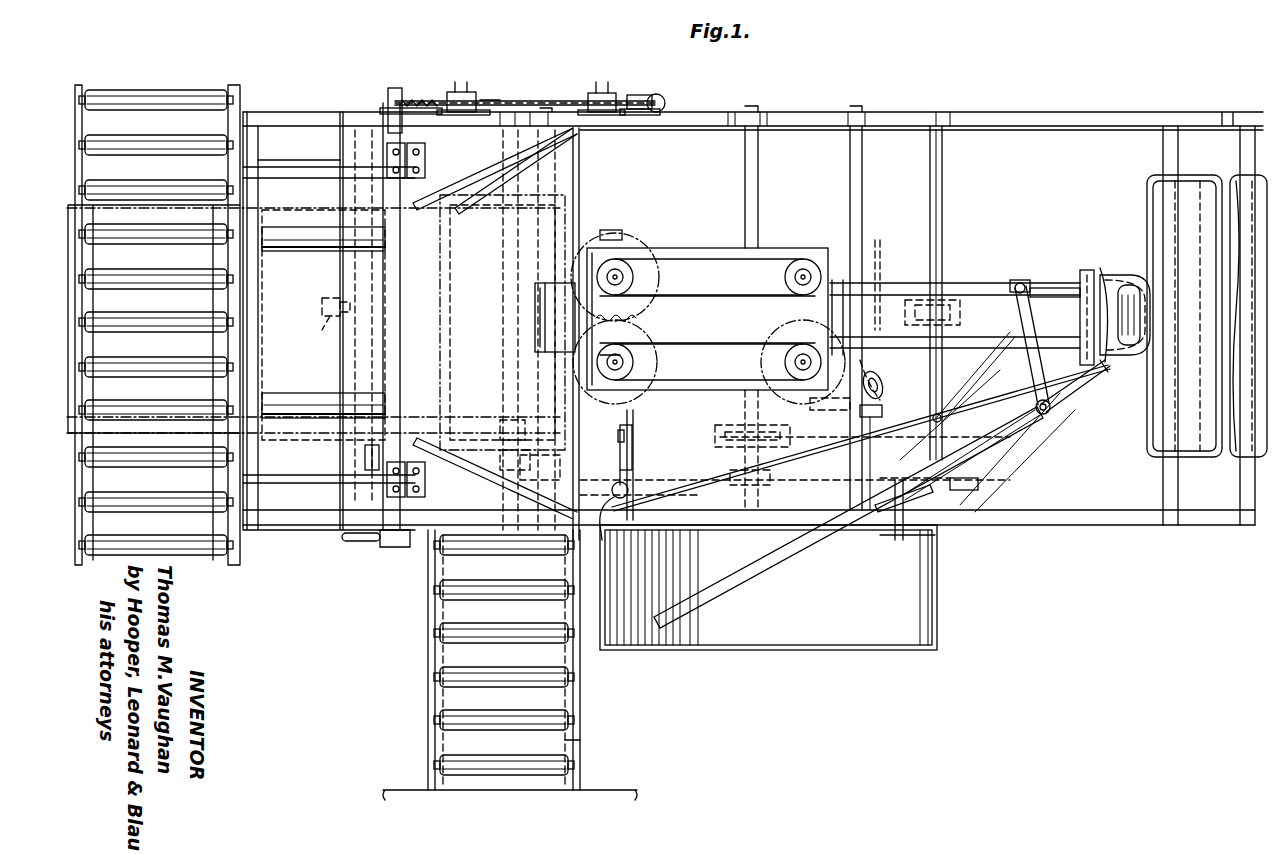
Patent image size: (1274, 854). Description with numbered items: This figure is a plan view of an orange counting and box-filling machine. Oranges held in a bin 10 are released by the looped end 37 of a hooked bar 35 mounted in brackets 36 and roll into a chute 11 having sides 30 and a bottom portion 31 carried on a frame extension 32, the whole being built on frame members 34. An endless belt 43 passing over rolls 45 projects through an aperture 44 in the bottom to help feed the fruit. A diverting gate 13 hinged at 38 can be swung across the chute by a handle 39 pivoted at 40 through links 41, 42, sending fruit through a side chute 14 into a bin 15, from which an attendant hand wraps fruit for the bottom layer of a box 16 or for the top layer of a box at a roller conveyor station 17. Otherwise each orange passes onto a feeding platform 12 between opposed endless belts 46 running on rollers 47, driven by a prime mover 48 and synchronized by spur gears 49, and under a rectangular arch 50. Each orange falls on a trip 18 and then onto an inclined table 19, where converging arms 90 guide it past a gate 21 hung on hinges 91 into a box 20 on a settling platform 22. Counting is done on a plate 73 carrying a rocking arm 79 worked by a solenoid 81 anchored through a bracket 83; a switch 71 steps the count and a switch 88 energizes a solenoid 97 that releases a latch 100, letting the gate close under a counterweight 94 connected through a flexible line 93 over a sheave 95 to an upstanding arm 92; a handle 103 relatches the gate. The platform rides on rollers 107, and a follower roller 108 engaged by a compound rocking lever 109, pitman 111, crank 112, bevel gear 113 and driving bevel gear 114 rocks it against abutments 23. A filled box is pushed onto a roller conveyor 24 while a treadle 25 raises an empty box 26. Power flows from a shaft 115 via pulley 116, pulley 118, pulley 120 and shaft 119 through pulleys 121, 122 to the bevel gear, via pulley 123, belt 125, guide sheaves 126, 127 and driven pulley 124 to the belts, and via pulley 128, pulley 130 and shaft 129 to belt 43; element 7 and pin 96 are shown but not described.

The panel 7 is at (562, 163).
The bin 10 is at (1190, 195).
The chute 11 is at (945, 295).
The feeding platform 12 is at (707, 319).
The diverting gate 13 is at (1005, 322).
The chute 14 is at (905, 540).
The bin 15 is at (788, 640).
The box 16 is at (566, 742).
The roller conveyor station 17 is at (460, 670).
The trip 18 is at (545, 310).
The inclined table 19 is at (502, 330).
The box 20 is at (300, 182).
The gate 21 is at (395, 363).
The settling platform 22 is at (265, 478).
The abutments 23 is at (300, 478).
The roller conveyor 24 is at (170, 82).
The treadle 25 is at (95, 258).
The empty box 26 is at (578, 162).
The sides 30 is at (1135, 275).
The bottom portion 31 is at (1140, 310).
The frame extension 32 is at (1022, 104).
The frame members 34 is at (385, 160).
The hooked bar 35 is at (1060, 416).
The brackets 36 is at (1075, 372).
The looped end 37 is at (1140, 323).
The hinge 38 is at (1045, 288).
The handle 39 is at (755, 570).
The pivot 40 is at (880, 515).
The link 41 is at (1040, 350).
The link 42 is at (1018, 285).
The endless belt 43 is at (950, 372).
The aperture 44 is at (1100, 268).
The rolls 45 is at (878, 255).
The opposed endless belts 46 is at (715, 345).
The rollers 47 is at (625, 275).
The prime mover 48 is at (950, 380).
The spur gears 49 is at (640, 318).
The rectangular arch 50 is at (620, 262).
The switch 71 is at (600, 88).
The plate 73 is at (642, 462).
The rocking arm 79 is at (618, 442).
The solenoid 81 is at (610, 482).
The bracket 83 is at (672, 505).
The switch 88 is at (640, 434).
The converging arms 90 is at (488, 150).
The hinges 91 is at (425, 158).
The upstanding arm 92 is at (400, 75).
The flexible line 93 is at (538, 102).
The counterweight 94 is at (665, 100).
The sheave 95 is at (636, 95).
The pin 96 is at (482, 100).
The solenoid 97 is at (456, 88).
The latch 100 is at (390, 100).
The handle 103 is at (360, 541).
The rollers 107 is at (312, 260).
The follower roller 108 is at (322, 306).
The compound rocking lever 109 is at (325, 326).
The pitman 111 is at (440, 345).
The crank 112 is at (372, 472).
The bevel gear 113 is at (515, 418).
The driving bevel gear 114 is at (604, 511).
The shaft 115 is at (942, 178).
The pulley 116 is at (985, 448).
The pulley 118 is at (965, 465).
The shaft 119 is at (758, 178).
The pulley 120 is at (738, 447).
The pulley 121 is at (762, 478).
The pulley 122 is at (507, 483).
The pulley 123 is at (1010, 432).
The driven pulley 124 is at (760, 362).
The belt 125 is at (845, 410).
The guide sheave 126 is at (881, 373).
The guide sheave 127 is at (881, 457).
The pulley 128 is at (955, 485).
The shaft 129 is at (862, 178).
The pulley 130 is at (845, 488).